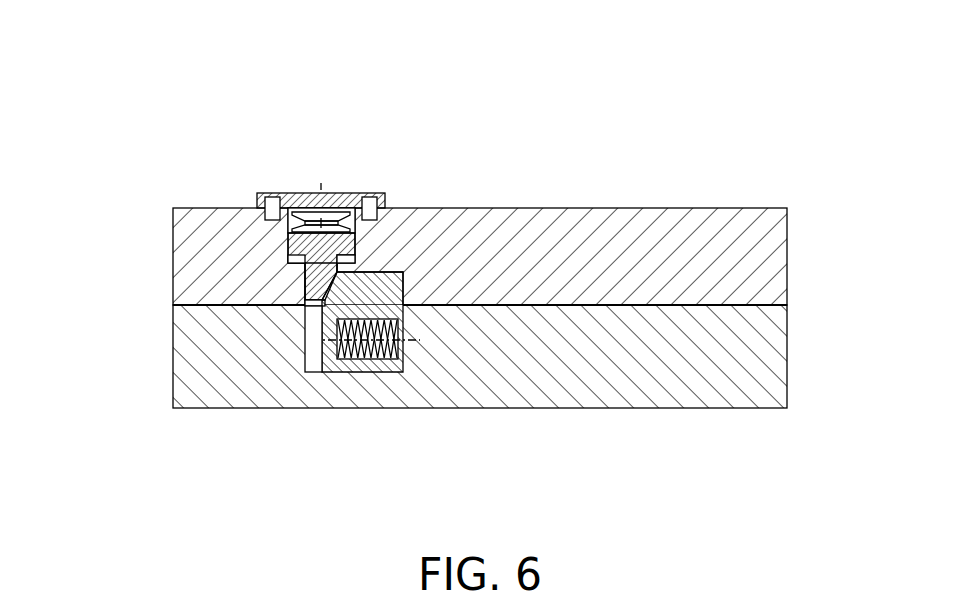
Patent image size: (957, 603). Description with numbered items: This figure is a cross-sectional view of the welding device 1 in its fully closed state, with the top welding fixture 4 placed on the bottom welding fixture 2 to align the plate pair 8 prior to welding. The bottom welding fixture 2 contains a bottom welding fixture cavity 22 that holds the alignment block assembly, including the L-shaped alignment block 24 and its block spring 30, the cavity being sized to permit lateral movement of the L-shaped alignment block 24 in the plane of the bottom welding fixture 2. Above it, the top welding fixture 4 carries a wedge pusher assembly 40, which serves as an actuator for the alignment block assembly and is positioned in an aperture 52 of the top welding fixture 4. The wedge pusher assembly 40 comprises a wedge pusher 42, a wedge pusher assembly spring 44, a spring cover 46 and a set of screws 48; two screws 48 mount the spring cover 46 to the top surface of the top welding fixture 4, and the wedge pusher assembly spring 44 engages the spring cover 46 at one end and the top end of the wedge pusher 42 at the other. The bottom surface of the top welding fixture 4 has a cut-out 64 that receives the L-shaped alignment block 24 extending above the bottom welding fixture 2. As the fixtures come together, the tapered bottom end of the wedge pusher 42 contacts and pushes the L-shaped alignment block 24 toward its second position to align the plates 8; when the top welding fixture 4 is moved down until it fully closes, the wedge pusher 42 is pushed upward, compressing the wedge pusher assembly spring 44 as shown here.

The device 1 is at (432, 266).
The bottom welding fixture 2 is at (203, 340).
The top welding fixture 4 is at (232, 246).
The plate pair 8 is at (757, 303).
The bottom welding fixture cavity 22 is at (314, 365).
The L-shaped alignment block 24 is at (341, 360).
The block spring 30 is at (391, 358).
The wedge pusher assembly 40 is at (344, 245).
The wedge pusher 42 is at (308, 294).
The wedge pusher assembly spring 44 is at (303, 193).
The spring cover 46 is at (343, 193).
The screws 48 is at (273, 193).
The aperture 52 is at (355, 258).
The cut-out 64 is at (440, 310).